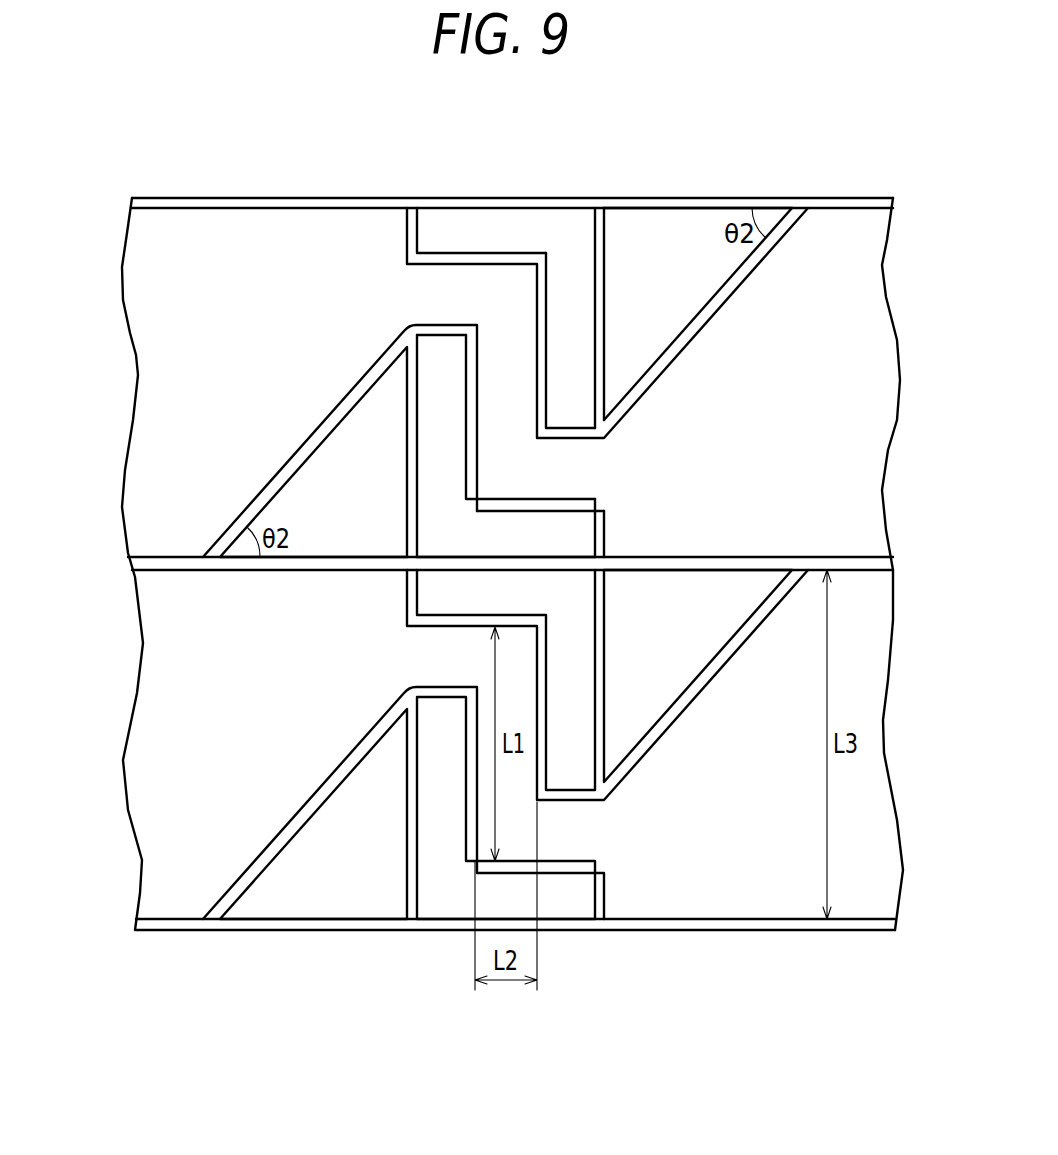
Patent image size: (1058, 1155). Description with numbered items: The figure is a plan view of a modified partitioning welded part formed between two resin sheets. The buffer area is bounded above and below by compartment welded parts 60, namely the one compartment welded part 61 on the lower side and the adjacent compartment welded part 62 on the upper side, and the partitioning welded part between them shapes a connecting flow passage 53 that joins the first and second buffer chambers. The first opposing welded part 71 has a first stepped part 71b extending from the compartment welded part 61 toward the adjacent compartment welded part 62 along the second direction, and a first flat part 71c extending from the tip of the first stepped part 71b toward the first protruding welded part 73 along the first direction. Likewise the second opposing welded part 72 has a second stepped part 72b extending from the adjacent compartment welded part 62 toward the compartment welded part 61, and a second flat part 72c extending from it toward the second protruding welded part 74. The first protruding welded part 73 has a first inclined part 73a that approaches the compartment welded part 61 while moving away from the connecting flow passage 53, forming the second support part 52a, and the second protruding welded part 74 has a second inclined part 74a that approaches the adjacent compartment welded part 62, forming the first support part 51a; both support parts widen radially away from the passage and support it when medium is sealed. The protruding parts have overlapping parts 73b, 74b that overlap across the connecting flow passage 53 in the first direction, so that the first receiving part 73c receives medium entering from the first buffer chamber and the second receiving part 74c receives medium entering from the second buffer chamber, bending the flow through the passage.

The compartment welded parts 60 is at (468, 377).
The compartment welded part 61 is at (168, 572).
The adjacent compartment welded part 62 is at (170, 197).
The first support part 51a is at (720, 390).
The second support part 52a is at (280, 350).
The connecting flow passage 53 is at (523, 433).
The first opposing welded part 71 is at (718, 334).
The first stepped part 71b is at (605, 528).
The first flat part 71c is at (553, 500).
The second opposing welded part 72 is at (458, 285).
The second stepped part 72b is at (406, 245).
The second flat part 72c is at (437, 266).
The first protruding welded part 73 is at (407, 333).
The first inclined part 73a is at (340, 400).
The overlapping part 73b is at (500, 410).
The first receiving part 73c is at (477, 470).
The second protruding welded part 74 is at (687, 265).
The second inclined part 74a is at (735, 290).
The overlapping part 74b is at (528, 235).
The second receiving part 74c is at (525, 300).